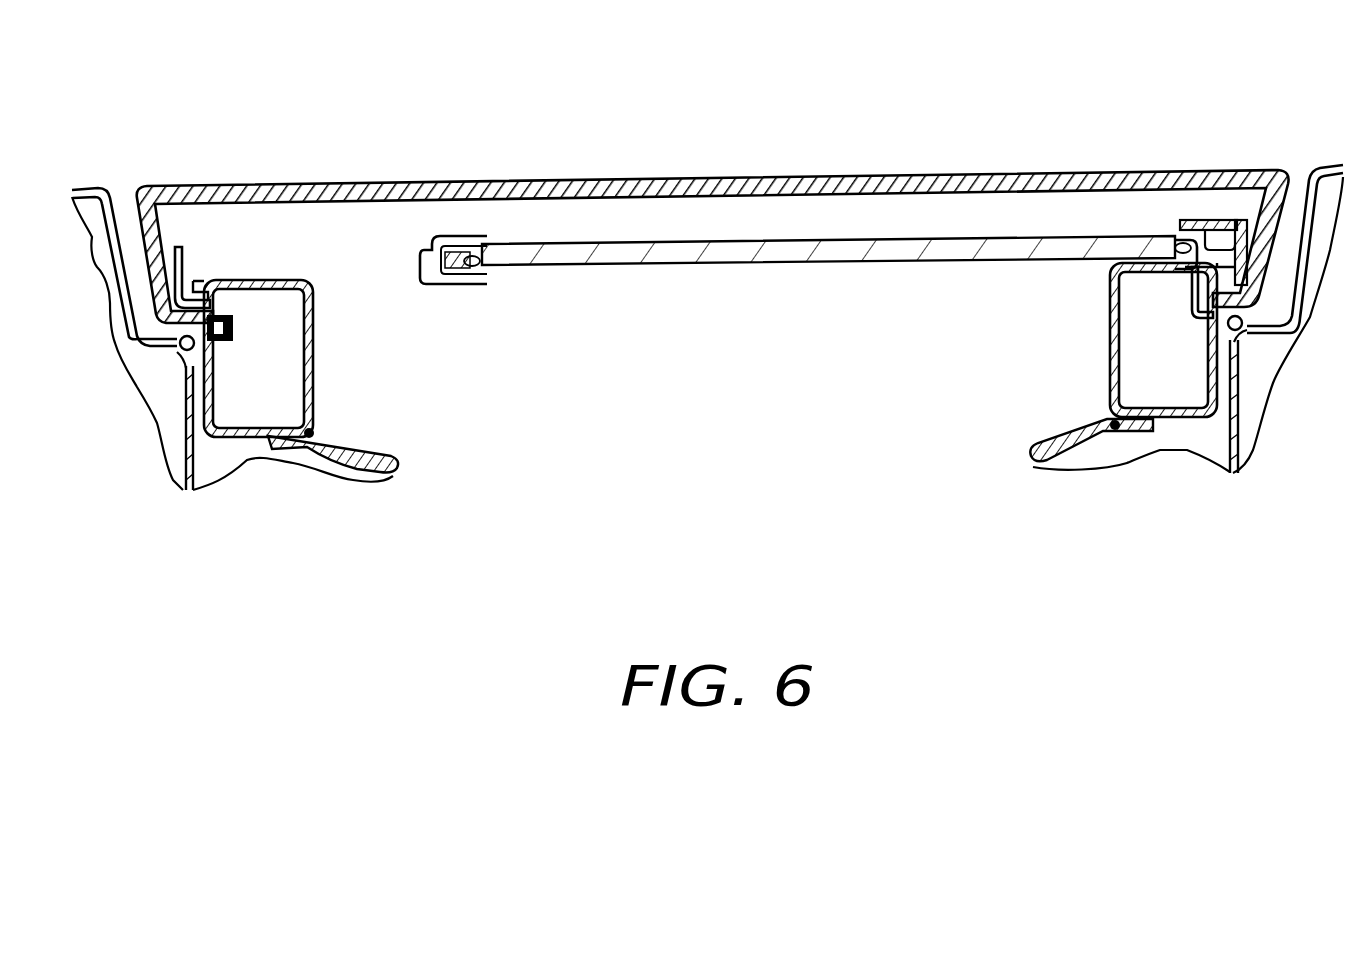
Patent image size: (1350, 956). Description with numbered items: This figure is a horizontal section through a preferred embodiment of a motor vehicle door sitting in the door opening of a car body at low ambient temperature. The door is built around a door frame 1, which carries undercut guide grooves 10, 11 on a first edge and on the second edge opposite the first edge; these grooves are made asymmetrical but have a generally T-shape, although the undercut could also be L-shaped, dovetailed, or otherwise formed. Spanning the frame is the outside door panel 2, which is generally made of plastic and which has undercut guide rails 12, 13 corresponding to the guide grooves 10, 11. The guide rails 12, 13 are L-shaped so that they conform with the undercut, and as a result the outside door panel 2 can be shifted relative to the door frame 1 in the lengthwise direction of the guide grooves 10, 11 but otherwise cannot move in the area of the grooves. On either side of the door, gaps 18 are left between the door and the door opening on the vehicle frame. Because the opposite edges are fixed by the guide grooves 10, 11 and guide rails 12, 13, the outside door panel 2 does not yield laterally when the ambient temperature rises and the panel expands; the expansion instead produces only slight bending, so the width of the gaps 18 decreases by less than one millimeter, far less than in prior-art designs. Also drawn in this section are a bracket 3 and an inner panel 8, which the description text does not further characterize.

The door frame 1 is at (243, 437).
The outside door panel 2 is at (773, 180).
The bracket 3 is at (357, 463).
The inner panel 8 is at (768, 262).
The guide groove 10 is at (235, 322).
The guide groove 11 is at (1190, 302).
The guide rail 12 is at (238, 350).
The guide rail 13 is at (1200, 317).
The gap 18 is at (113, 178).